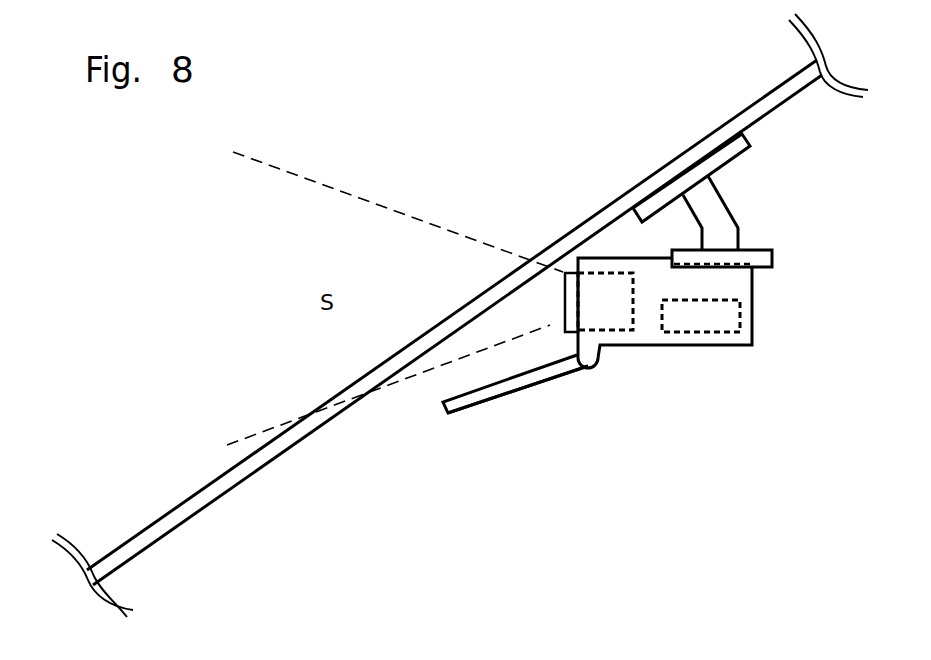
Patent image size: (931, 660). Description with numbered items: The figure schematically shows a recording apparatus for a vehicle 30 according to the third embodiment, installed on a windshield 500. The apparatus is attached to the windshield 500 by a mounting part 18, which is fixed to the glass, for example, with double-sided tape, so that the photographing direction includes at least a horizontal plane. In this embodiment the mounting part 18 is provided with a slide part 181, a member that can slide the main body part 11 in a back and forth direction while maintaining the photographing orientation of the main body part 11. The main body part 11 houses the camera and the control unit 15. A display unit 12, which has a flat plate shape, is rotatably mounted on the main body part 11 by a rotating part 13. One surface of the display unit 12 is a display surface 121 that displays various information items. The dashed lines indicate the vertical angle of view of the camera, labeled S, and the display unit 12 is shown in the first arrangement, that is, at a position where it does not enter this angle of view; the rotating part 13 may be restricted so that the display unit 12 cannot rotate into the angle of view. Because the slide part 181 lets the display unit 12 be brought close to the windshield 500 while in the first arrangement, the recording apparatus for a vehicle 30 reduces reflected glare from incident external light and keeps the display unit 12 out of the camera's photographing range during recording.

The windshield 500 is at (183, 502).
The mounting part 18 is at (728, 207).
The slide part 181 is at (757, 249).
The main body part 11 is at (752, 277).
The control unit 15 is at (740, 318).
The rotating part 13 is at (593, 362).
The display unit 12 is at (491, 399).
The display surface 121 is at (533, 385).
The recording apparatus for a vehicle 30 is at (703, 392).